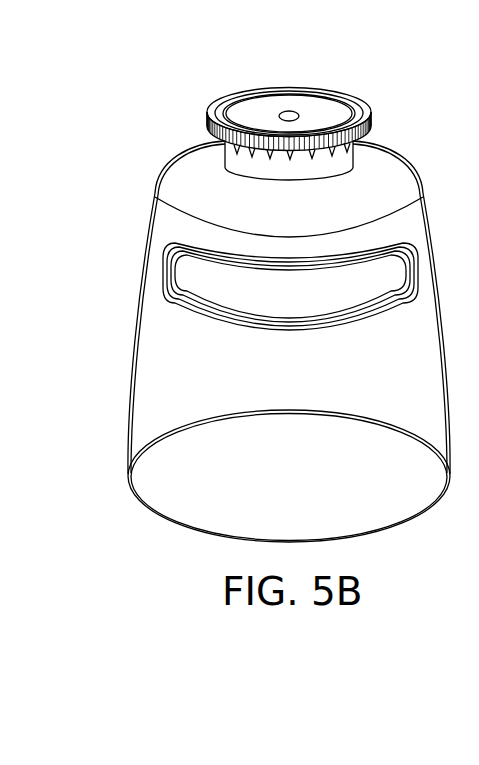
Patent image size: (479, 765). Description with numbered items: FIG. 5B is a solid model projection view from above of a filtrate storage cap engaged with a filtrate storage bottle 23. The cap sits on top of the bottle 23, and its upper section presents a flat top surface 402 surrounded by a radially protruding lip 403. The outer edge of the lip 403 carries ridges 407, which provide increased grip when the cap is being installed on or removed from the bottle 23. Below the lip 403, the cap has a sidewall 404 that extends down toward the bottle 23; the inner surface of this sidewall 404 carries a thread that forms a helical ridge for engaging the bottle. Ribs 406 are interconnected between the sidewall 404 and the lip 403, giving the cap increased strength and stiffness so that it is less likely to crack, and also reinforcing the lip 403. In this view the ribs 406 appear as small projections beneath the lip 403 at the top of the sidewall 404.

The bottle 23 is at (130, 340).
The flat top surface 402 is at (289, 103).
The radially protruding lip 403 is at (362, 117).
The sidewall 404 is at (265, 172).
The ribs 406 is at (243, 162).
The ridges 407 is at (373, 126).